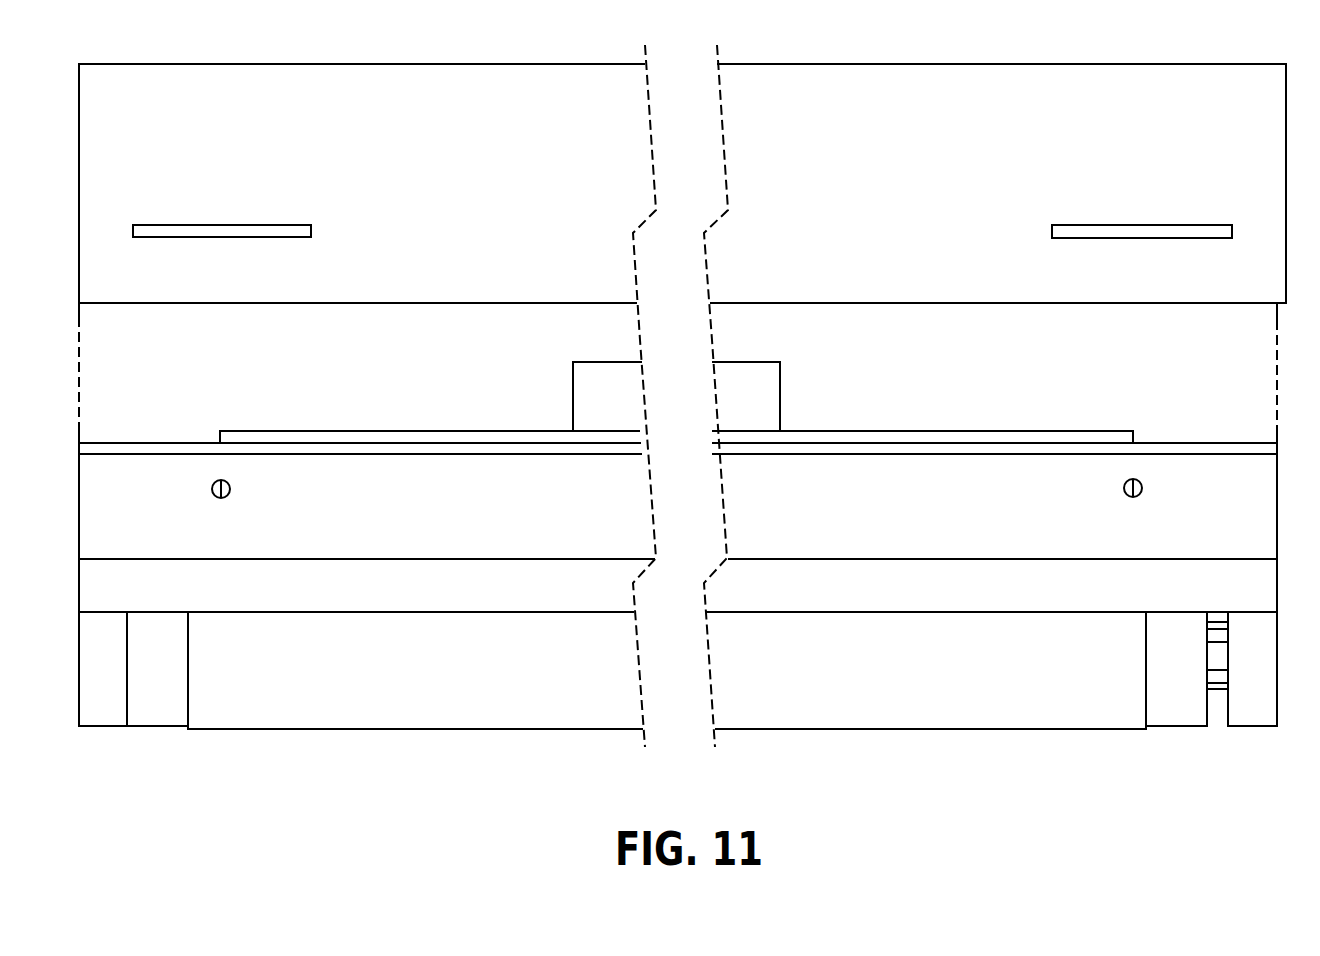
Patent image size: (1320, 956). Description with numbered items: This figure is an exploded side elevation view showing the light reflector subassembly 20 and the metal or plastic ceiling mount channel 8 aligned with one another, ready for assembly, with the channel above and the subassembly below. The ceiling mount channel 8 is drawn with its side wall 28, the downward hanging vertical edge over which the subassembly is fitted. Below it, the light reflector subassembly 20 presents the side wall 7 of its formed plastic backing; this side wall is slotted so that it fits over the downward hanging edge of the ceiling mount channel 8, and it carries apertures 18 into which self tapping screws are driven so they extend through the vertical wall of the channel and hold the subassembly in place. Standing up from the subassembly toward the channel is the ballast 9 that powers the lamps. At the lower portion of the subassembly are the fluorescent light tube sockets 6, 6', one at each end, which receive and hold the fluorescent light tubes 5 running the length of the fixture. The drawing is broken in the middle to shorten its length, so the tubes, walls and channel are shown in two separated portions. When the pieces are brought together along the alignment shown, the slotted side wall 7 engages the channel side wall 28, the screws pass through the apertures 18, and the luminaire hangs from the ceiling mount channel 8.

The fluorescent light tubes 5 is at (890, 730).
The fluorescent light tube socket 6 is at (133, 704).
The fluorescent light tube socket 6' is at (1225, 706).
The side wall of plastic backing 7 is at (888, 503).
The ceiling mount channel 8 is at (682, 164).
The ballast 9 is at (782, 361).
The apertures for screws 18 is at (214, 482).
The light reflector subassembly 20 is at (904, 355).
The side wall of ceiling mount channel 28 is at (469, 184).